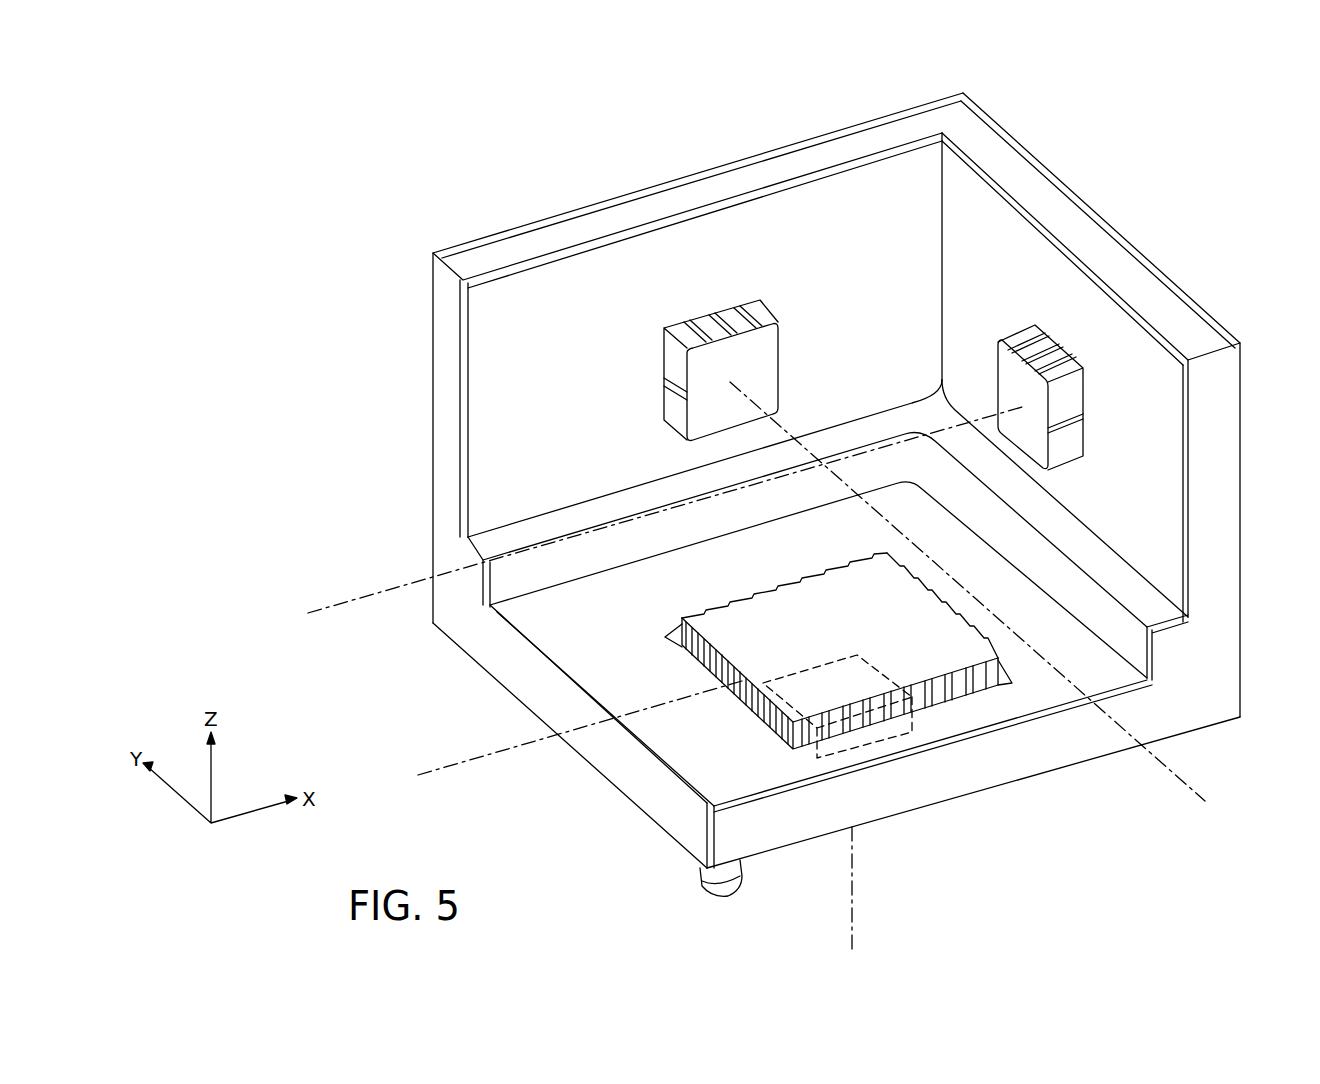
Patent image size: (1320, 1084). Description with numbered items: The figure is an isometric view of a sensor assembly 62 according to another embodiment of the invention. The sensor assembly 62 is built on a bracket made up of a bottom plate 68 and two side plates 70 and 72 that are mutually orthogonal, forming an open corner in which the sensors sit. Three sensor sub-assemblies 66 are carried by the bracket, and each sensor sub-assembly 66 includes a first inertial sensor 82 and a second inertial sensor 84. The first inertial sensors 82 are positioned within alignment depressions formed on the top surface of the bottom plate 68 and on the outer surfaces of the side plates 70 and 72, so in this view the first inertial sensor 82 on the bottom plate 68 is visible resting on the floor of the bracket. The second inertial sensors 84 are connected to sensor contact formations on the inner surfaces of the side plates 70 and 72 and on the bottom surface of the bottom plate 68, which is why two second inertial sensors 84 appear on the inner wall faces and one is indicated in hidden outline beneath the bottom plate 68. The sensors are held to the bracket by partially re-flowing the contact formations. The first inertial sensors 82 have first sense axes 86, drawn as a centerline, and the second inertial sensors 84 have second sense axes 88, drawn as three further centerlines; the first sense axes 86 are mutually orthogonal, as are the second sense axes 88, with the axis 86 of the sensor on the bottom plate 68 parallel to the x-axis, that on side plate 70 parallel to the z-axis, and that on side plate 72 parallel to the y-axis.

The sensor assembly 62 is at (540, 142).
The sensor sub-assemblies 66 is at (1006, 768).
The bottom plate 68 is at (630, 784).
The side plate 70 is at (466, 250).
The side plate 72 is at (1200, 312).
The first inertial sensor 82 is at (780, 590).
The second inertial sensor 84 is at (727, 318).
The first sense axes 86 is at (468, 760).
The second sense axes 88 is at (326, 607).